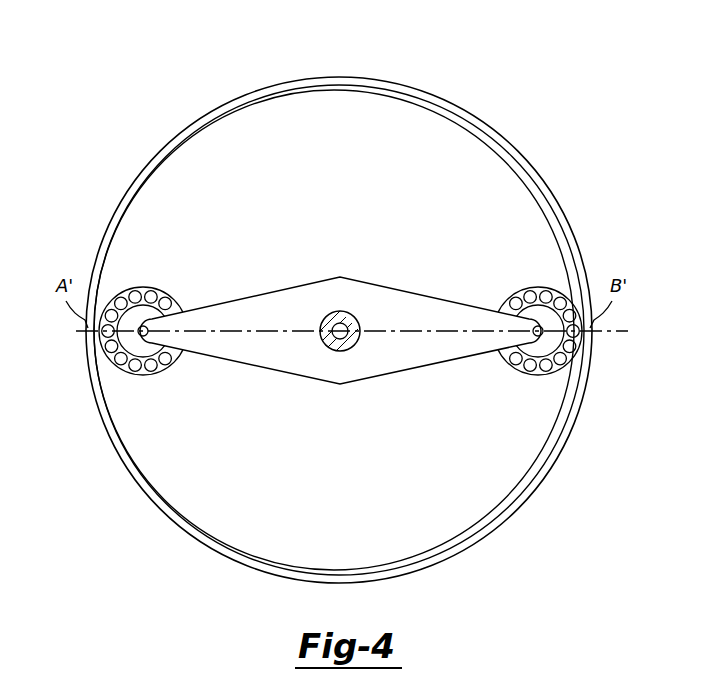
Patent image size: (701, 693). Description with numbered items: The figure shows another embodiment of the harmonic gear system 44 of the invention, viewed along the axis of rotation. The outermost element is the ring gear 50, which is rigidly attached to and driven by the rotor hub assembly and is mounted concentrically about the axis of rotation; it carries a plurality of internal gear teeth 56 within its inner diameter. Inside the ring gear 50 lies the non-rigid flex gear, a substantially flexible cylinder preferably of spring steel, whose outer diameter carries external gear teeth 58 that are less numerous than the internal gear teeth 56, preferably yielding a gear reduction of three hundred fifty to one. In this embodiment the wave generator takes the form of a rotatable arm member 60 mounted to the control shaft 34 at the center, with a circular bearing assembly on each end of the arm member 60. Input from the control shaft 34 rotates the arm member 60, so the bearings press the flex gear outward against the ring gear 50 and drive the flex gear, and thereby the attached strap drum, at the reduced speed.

The torque transfer assembly 44 is at (110, 98).
The internal gear teeth 56 is at (437, 98).
The ring gear 50 is at (542, 171).
The external gear teeth 58 is at (359, 92).
The rotatable arm member 60 is at (322, 370).
The control shaft 34 is at (355, 344).